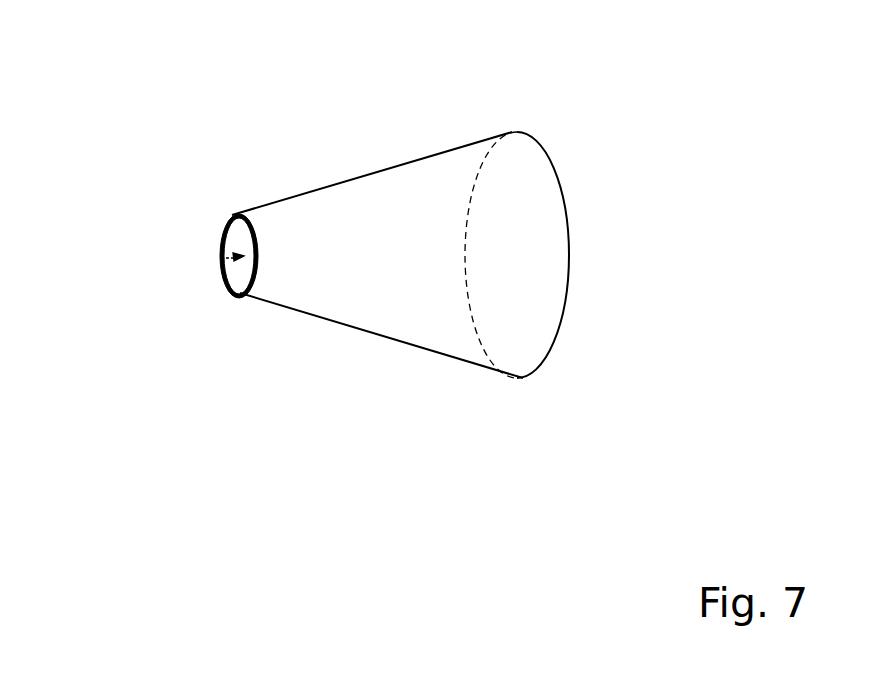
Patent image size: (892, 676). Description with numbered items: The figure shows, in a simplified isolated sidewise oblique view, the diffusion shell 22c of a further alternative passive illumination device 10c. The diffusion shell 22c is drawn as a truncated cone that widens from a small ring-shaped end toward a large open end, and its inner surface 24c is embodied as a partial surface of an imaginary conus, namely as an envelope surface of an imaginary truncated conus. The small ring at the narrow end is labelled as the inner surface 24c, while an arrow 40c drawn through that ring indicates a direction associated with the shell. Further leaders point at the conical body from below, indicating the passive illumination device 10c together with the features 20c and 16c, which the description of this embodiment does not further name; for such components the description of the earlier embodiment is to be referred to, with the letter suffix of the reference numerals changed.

The passive illumination device 10c is at (365, 380).
The outlet opening 16c is at (435, 405).
The lower wall 20c is at (290, 365).
The diffusion shell 22c is at (352, 178).
The inner surface 24c is at (238, 232).
The flow direction 40c is at (222, 258).